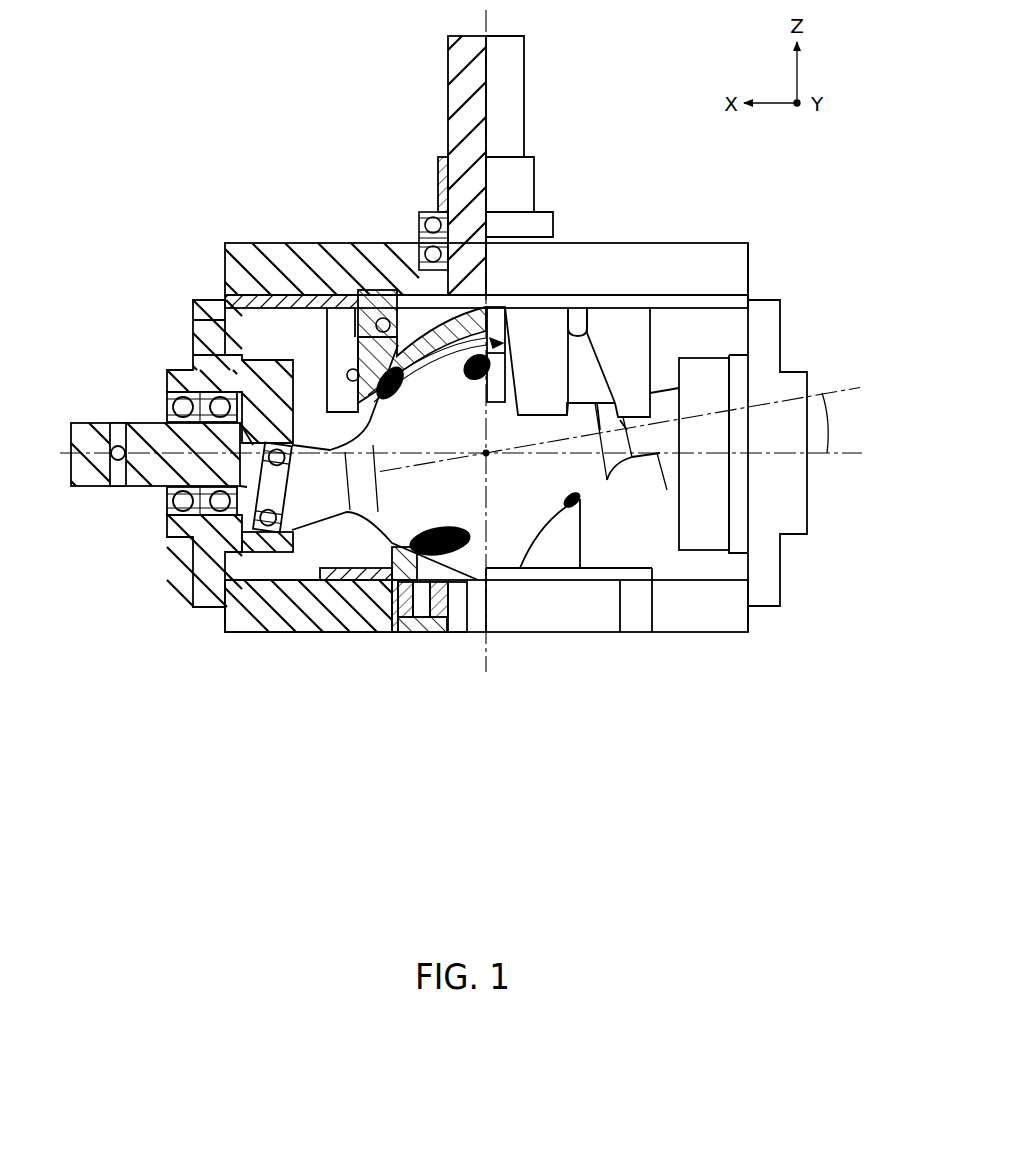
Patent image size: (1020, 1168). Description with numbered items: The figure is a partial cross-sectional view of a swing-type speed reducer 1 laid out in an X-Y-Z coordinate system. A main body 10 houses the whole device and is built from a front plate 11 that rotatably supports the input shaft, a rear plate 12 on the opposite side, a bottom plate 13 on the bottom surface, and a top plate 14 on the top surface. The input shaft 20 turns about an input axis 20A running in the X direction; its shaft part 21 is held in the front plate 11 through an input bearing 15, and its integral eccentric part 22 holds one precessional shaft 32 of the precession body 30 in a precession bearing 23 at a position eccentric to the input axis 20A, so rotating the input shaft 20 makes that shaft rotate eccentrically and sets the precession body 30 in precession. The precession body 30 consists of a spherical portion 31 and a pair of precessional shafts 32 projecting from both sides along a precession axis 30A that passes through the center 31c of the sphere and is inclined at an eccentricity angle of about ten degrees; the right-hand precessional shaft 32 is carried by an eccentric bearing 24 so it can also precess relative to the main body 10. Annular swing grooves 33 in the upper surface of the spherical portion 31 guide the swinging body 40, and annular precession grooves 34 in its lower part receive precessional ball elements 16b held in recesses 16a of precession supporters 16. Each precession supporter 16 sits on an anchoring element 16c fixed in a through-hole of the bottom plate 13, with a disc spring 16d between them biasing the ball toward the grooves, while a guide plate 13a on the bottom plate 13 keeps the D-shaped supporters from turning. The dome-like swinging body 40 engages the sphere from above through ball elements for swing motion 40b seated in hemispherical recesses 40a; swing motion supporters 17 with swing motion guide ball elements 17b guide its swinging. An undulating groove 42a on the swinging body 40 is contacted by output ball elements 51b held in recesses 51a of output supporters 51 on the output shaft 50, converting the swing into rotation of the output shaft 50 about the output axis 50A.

The swing-type speed reducer 1 is at (770, 175).
The main body 10 is at (797, 265).
The front plate 11 is at (193, 347).
The rear plate 12 is at (780, 346).
The bottom plate 13 is at (695, 636).
The guide plate 13a is at (300, 600).
The top plate 14 is at (250, 242).
The input bearing 15 is at (167, 402).
The precession supporter 16 is at (365, 546).
The recess 16a is at (430, 612).
The precessional ball element 16b is at (457, 600).
The anchoring element 16c is at (430, 628).
The disc spring 16d is at (392, 560).
The swing motion supporter 17 is at (350, 350).
The swing motion guide ball element 17b is at (356, 290).
The input shaft 20 is at (95, 393).
The input axis 20A is at (833, 455).
The shaft part 21 is at (140, 483).
The eccentric part 22 is at (225, 617).
The precession bearing 23 is at (237, 532).
The eccentric bearing 24 is at (717, 552).
The precession body 30 is at (607, 507).
The precession axis 30A is at (830, 394).
The spherical portion 31 is at (530, 492).
The center 31c is at (486, 453).
The precessional shaft 32 is at (280, 560).
The annular swing groove 33 is at (522, 336).
The annular precession groove 34 is at (473, 548).
The swinging body 40 is at (600, 330).
The hemispherical recess 40a is at (432, 310).
The ball element for swing motion 40b is at (404, 330).
The undulating groove 42a is at (478, 290).
The output shaft 50 is at (444, 74).
The output axis 50A is at (489, 52).
The output supporter 51 is at (408, 262).
The recess 51a is at (364, 288).
The output ball element 51b is at (382, 292).